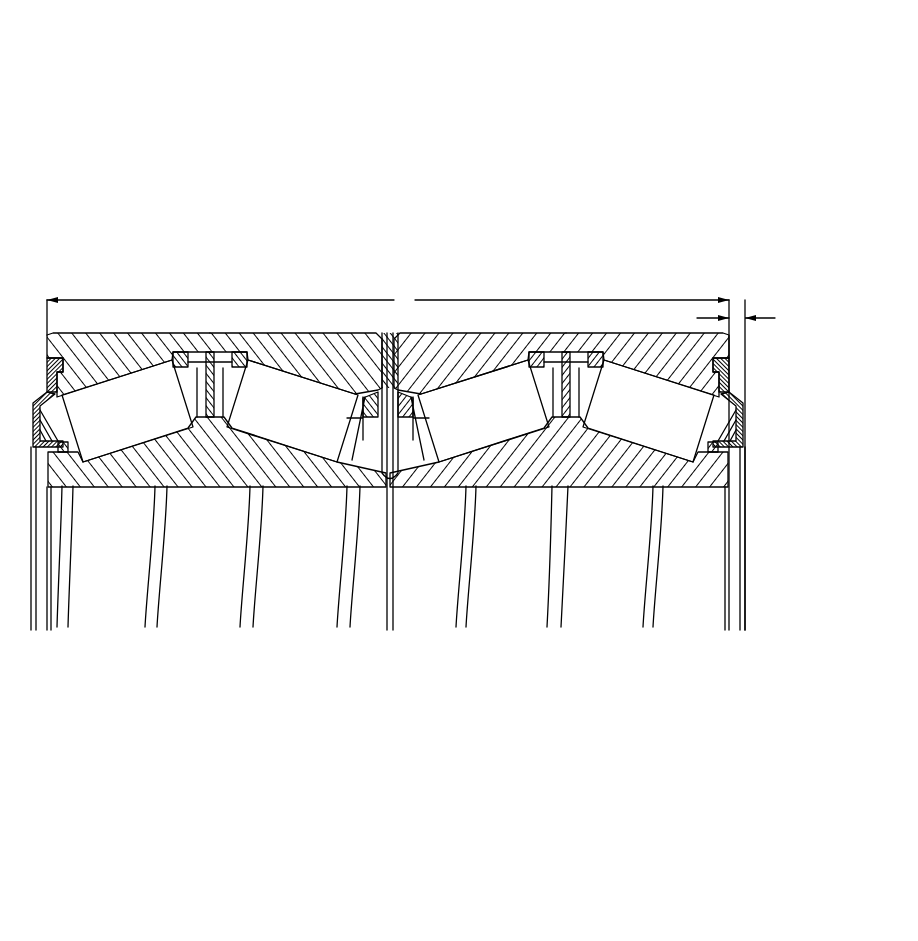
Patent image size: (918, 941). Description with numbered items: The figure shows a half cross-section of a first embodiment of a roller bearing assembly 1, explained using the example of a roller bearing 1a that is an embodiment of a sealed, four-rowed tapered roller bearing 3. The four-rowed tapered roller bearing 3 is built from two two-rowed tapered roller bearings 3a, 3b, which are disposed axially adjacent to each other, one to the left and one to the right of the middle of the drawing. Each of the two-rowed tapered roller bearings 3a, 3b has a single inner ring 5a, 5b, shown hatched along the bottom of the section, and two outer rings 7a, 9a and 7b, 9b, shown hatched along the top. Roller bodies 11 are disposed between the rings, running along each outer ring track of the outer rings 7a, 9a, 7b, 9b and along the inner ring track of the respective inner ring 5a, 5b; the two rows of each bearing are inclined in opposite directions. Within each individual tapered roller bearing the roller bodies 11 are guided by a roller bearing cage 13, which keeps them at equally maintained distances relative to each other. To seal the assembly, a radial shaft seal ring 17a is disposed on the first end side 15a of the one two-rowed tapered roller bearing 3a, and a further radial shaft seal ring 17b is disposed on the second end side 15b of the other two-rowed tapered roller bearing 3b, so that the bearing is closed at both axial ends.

The roller bearing assembly 1 is at (397, 466).
The roller bearing 1a is at (392, 388).
The four-rowed tapered roller bearing 3 is at (358, 118).
The two-rowed tapered roller bearing 3a is at (208, 278).
The two-rowed tapered roller bearing 3b is at (565, 284).
The inner ring 5a is at (217, 455).
The inner ring 5b is at (563, 455).
The outer ring 7a is at (110, 350).
The outer ring 7b is at (677, 350).
The outer ring 9a is at (331, 356).
The outer ring 9b is at (447, 356).
The roller bodies 11 is at (653, 428).
The roller bearing cage 13 is at (173, 352).
The first end side 15a is at (48, 350).
The second end side 15b is at (728, 352).
The radial shaft seal ring 17a is at (26, 452).
The radial shaft seal ring 17b is at (748, 457).